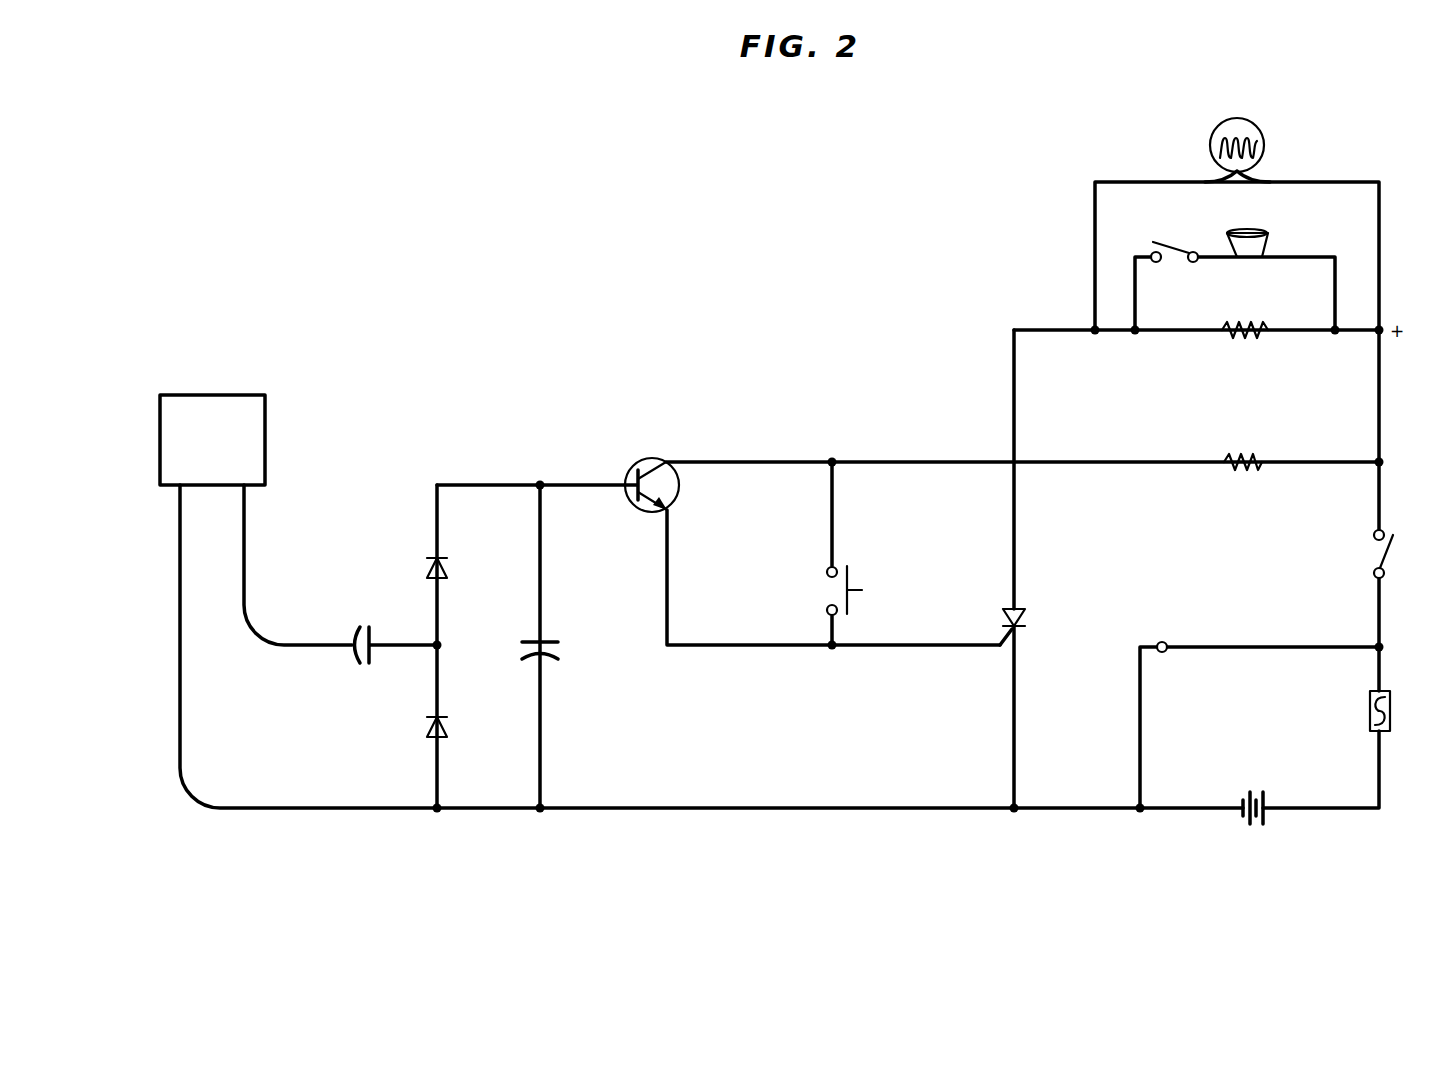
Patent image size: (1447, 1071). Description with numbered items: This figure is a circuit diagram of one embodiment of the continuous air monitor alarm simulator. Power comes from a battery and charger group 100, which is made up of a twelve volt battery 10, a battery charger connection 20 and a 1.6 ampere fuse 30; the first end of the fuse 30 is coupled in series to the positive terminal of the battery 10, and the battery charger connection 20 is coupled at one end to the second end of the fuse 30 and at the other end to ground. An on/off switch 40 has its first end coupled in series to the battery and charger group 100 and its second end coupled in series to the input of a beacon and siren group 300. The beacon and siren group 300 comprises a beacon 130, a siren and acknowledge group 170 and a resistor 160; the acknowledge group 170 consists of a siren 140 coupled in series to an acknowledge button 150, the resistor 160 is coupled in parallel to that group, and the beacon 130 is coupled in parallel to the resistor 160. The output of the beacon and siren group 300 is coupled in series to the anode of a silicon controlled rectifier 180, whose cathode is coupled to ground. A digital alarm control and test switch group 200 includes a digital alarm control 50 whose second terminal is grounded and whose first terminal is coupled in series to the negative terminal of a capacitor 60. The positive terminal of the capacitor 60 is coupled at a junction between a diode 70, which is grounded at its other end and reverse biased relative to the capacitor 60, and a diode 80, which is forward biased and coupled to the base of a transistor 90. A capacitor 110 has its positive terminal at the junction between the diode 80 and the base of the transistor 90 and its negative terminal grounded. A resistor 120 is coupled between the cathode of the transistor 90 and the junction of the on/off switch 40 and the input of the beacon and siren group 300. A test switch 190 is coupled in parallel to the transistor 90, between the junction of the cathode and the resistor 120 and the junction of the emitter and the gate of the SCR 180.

The battery 10 is at (1250, 824).
The battery charger connection 20 is at (1161, 641).
The fuse 30 is at (1391, 715).
The on/off switch 40 is at (1393, 553).
The digital alarm control 50 is at (220, 393).
The capacitor 60 is at (356, 667).
The diode 70 is at (446, 727).
The diode 80 is at (446, 568).
The transistor 90 is at (678, 475).
The battery and charger group 100 is at (1273, 627).
The capacitor 110 is at (546, 639).
The resistor 120 is at (1238, 452).
The beacon 130 is at (1264, 148).
The siren 140 is at (1267, 247).
The acknowledge button 150 is at (1183, 250).
The resistor 160 is at (1252, 320).
The acknowledge group 170 is at (1248, 218).
The silicon controlled rectifier 180 is at (1020, 620).
The test switch 190 is at (848, 609).
The digital alarm control and test switch group 200 is at (643, 355).
The beacon and siren group 300 is at (1281, 114).